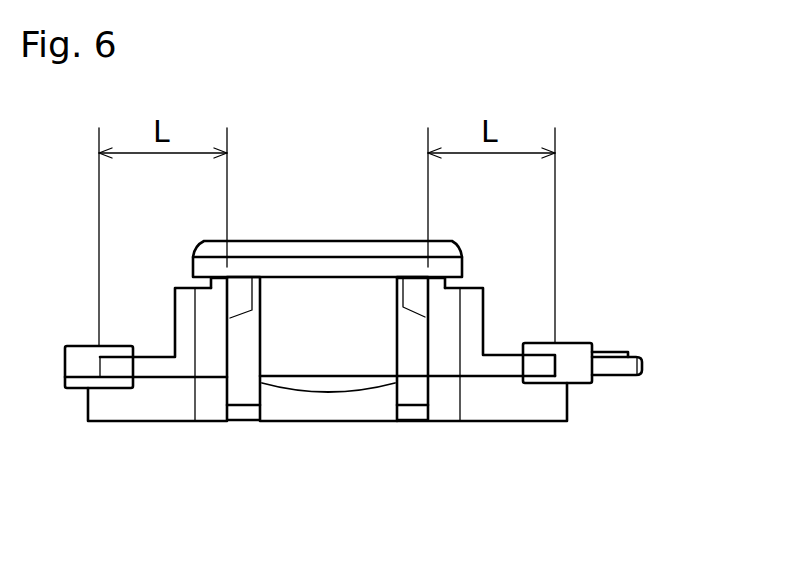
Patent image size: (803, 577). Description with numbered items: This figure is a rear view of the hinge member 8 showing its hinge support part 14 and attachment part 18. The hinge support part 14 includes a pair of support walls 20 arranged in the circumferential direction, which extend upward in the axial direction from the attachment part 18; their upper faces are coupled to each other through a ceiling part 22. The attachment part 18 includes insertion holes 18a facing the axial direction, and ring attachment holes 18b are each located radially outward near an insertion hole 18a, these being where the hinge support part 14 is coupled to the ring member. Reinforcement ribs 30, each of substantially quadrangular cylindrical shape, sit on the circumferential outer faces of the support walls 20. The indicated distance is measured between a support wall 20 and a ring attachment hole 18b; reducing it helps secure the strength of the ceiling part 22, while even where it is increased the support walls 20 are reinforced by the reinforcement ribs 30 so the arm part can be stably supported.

The hinge member 8 is at (683, 201).
The hinge support part 14 is at (487, 284).
The attachment part 18 is at (626, 342).
The insertion hole 18a is at (137, 423).
The ring attachment hole 18b is at (82, 345).
The support wall 20 is at (245, 357).
The ceiling part 22 is at (333, 240).
The reinforcement rib 30 is at (185, 303).